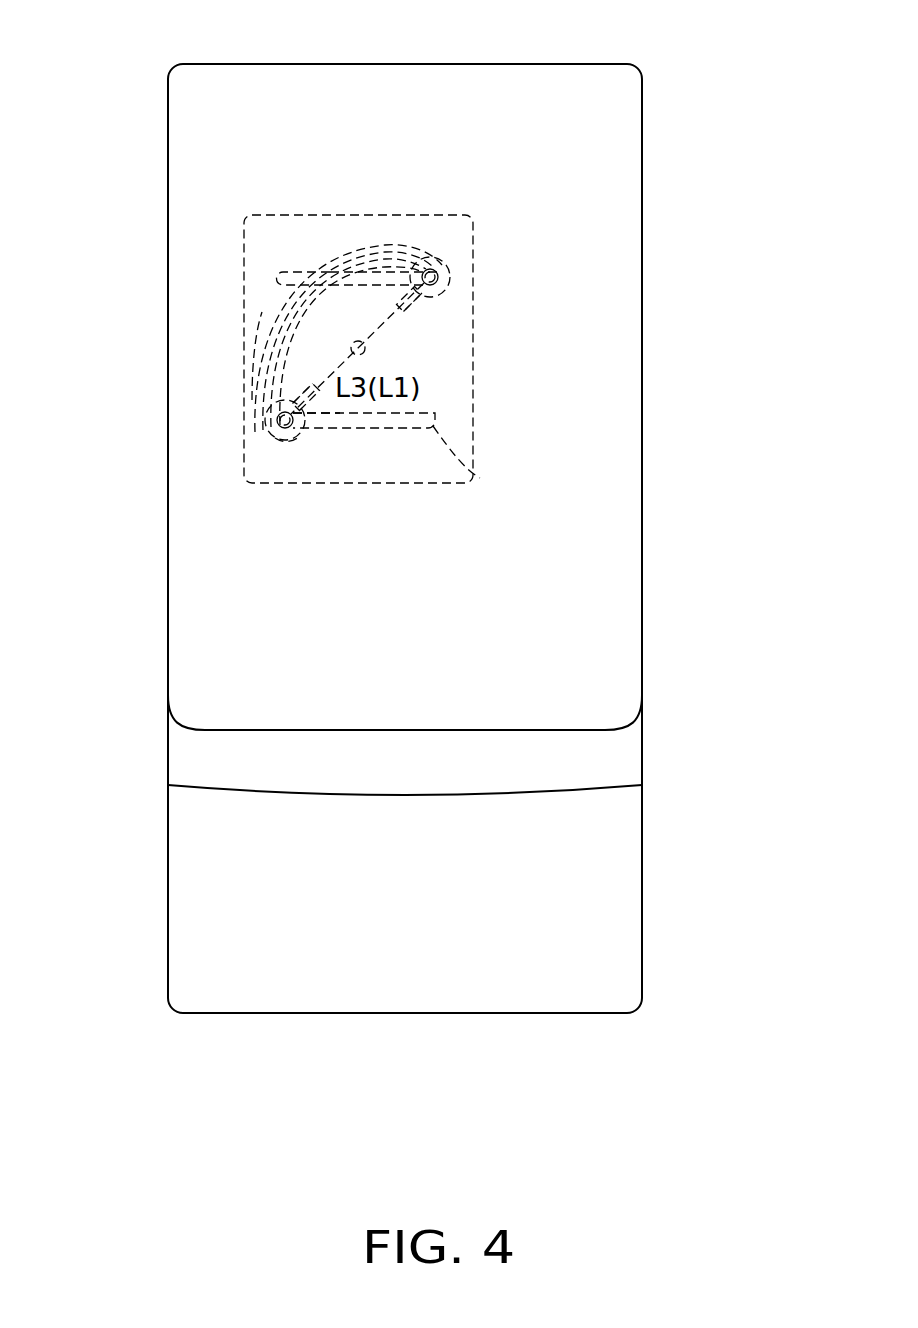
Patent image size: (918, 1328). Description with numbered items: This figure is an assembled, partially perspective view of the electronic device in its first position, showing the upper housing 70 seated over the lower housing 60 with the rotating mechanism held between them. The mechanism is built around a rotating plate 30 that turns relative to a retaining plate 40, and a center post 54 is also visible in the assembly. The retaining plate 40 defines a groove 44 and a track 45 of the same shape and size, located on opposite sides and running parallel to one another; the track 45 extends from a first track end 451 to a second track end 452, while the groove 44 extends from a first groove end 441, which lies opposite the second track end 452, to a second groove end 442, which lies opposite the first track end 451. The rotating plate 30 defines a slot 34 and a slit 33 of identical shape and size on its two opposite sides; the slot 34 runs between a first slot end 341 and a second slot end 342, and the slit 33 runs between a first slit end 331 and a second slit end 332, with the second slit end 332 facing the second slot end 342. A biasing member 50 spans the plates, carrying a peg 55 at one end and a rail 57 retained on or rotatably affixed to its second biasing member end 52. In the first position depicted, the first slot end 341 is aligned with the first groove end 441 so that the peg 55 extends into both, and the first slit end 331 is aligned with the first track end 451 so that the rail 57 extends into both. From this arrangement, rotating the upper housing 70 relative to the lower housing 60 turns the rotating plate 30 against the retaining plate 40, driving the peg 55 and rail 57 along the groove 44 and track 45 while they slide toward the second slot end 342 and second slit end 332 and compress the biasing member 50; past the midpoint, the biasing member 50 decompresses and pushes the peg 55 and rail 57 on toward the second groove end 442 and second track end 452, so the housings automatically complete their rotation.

The rotating plate 30 is at (514, 349).
The slit 33 is at (312, 395).
The first slit end 331 is at (283, 440).
The second slit end 332 is at (296, 388).
The slot 34 is at (420, 296).
The first slot end 341 is at (440, 258).
The second slot end 342 is at (420, 312).
The retaining plate 40 is at (473, 453).
The groove 44 is at (372, 266).
The first groove end 441 is at (442, 286).
The second groove end 442 is at (283, 279).
The track 45 is at (352, 428).
The first track end 451 is at (265, 430).
The second track end 452 is at (480, 478).
The biasing member 50 is at (258, 320).
The second biasing member end 52 is at (275, 432).
The center post 54 is at (366, 352).
The peg 55 is at (448, 270).
The rail 57 is at (272, 412).
The lower housing 60 is at (572, 863).
The upper housing 70 is at (578, 593).